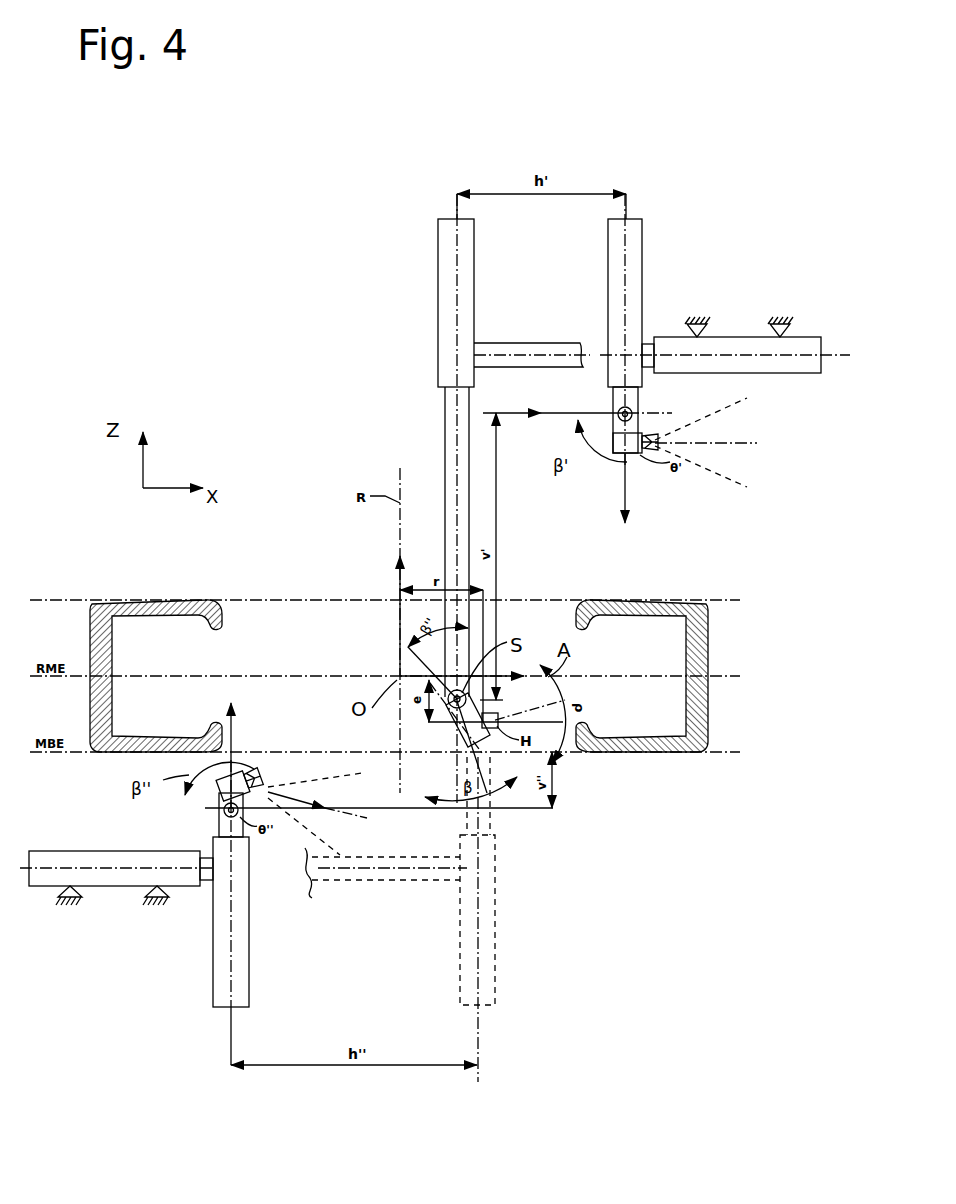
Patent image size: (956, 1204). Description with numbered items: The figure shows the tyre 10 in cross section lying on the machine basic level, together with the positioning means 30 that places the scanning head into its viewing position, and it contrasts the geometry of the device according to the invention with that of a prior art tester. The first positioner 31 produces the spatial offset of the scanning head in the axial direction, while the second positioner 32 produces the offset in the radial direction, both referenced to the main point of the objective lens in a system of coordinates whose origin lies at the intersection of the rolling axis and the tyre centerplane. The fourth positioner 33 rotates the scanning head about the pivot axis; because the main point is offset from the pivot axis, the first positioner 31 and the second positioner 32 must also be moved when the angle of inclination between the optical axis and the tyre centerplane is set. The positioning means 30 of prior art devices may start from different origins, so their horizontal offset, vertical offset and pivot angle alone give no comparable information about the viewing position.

The tyre 10 is at (92, 606).
The positioning means 30 is at (742, 330).
The first positioner 31 is at (445, 412).
The second positioner 32 is at (527, 355).
The fourth positioner 33 is at (448, 738).